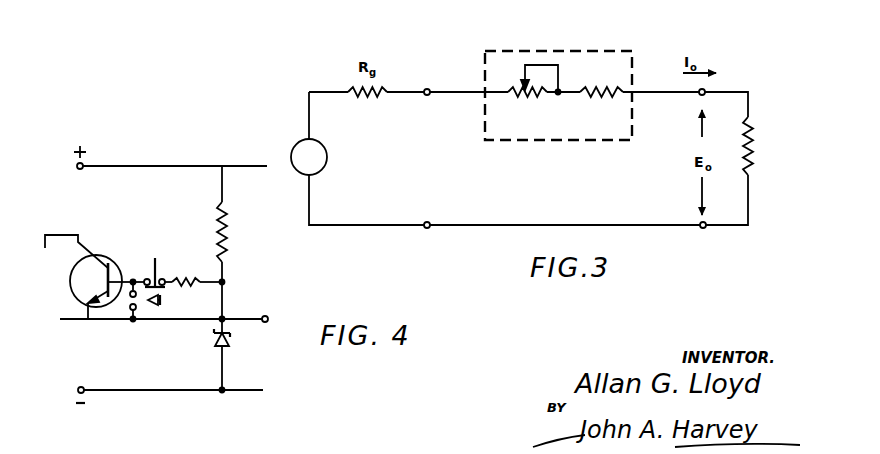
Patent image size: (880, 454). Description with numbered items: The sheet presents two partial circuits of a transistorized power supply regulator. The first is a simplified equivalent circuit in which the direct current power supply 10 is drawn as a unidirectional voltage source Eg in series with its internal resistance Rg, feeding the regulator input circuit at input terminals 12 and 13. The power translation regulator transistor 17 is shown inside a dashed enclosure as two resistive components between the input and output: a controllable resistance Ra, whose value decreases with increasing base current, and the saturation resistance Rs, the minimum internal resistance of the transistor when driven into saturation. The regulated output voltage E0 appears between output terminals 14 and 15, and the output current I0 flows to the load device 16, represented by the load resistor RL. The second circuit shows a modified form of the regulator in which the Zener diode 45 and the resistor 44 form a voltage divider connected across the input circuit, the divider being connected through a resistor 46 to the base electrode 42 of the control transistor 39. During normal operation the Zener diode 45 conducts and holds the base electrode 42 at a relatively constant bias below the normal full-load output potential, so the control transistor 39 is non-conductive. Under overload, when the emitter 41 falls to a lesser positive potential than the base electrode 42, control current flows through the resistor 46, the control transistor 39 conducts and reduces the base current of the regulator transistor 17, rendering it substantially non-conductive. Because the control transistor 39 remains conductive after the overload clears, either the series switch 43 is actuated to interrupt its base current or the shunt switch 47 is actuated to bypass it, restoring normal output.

In FIG. 3, the unidirectional power supply 10 is at (352, 100).
In FIG. 3, the input terminal 12 is at (429, 89).
In FIG. 4, the input terminal 12 is at (79, 169).
In FIG. 3, the input terminal 13 is at (429, 228).
In FIG. 4, the input terminal 13 is at (81, 387).
In FIG. 3, the output terminal 14 is at (706, 89).
In FIG. 4, the output terminal 14 is at (268, 316).
In FIG. 3, the output terminal 15 is at (705, 229).
In FIG. 3, the load device 16 is at (752, 133).
In FIG. 3, the power translation regulator transistor 17 is at (542, 51).
In FIG. 4, the control transistor 39 is at (100, 262).
In FIG. 4, the emitter 41 is at (88, 300).
In FIG. 4, the base electrode 42 is at (114, 307).
In FIG. 4, the series switch 43 is at (148, 268).
In FIG. 4, the resistor 44 is at (228, 228).
In FIG. 4, the Zener diode 45 is at (230, 337).
In FIG. 4, the resistor 46 is at (181, 278).
In FIG. 4, the shunt switch 47 is at (160, 306).